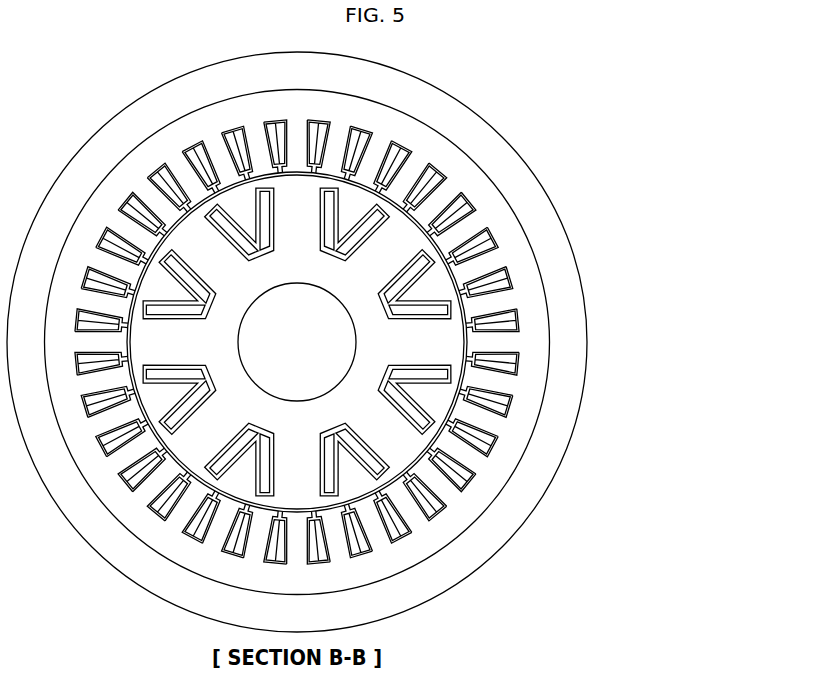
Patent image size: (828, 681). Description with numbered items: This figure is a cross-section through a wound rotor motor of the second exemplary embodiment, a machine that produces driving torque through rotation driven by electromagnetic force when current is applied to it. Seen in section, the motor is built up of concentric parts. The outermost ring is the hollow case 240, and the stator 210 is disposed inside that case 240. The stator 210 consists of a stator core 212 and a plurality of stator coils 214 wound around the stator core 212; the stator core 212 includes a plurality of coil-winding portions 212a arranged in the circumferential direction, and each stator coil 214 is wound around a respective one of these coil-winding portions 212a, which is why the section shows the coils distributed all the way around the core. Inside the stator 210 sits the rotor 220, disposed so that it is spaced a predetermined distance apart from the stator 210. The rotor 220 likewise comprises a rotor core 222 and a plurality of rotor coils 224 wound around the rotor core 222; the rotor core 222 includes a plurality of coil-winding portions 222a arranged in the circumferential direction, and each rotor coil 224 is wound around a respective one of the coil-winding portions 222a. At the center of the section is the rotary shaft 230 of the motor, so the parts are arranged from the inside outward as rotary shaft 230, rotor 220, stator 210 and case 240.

The stator 210 is at (390, 342).
The stator core 212 is at (508, 190).
The coil-winding portion 212a is at (482, 260).
The stator coil 214 is at (462, 290).
The rotor 220 is at (421, 354).
The rotor core 222 is at (415, 404).
The coil-winding portion 222a is at (387, 433).
The rotor coil 224 is at (366, 460).
The rotary shaft 230 is at (313, 310).
The case 240 is at (493, 125).